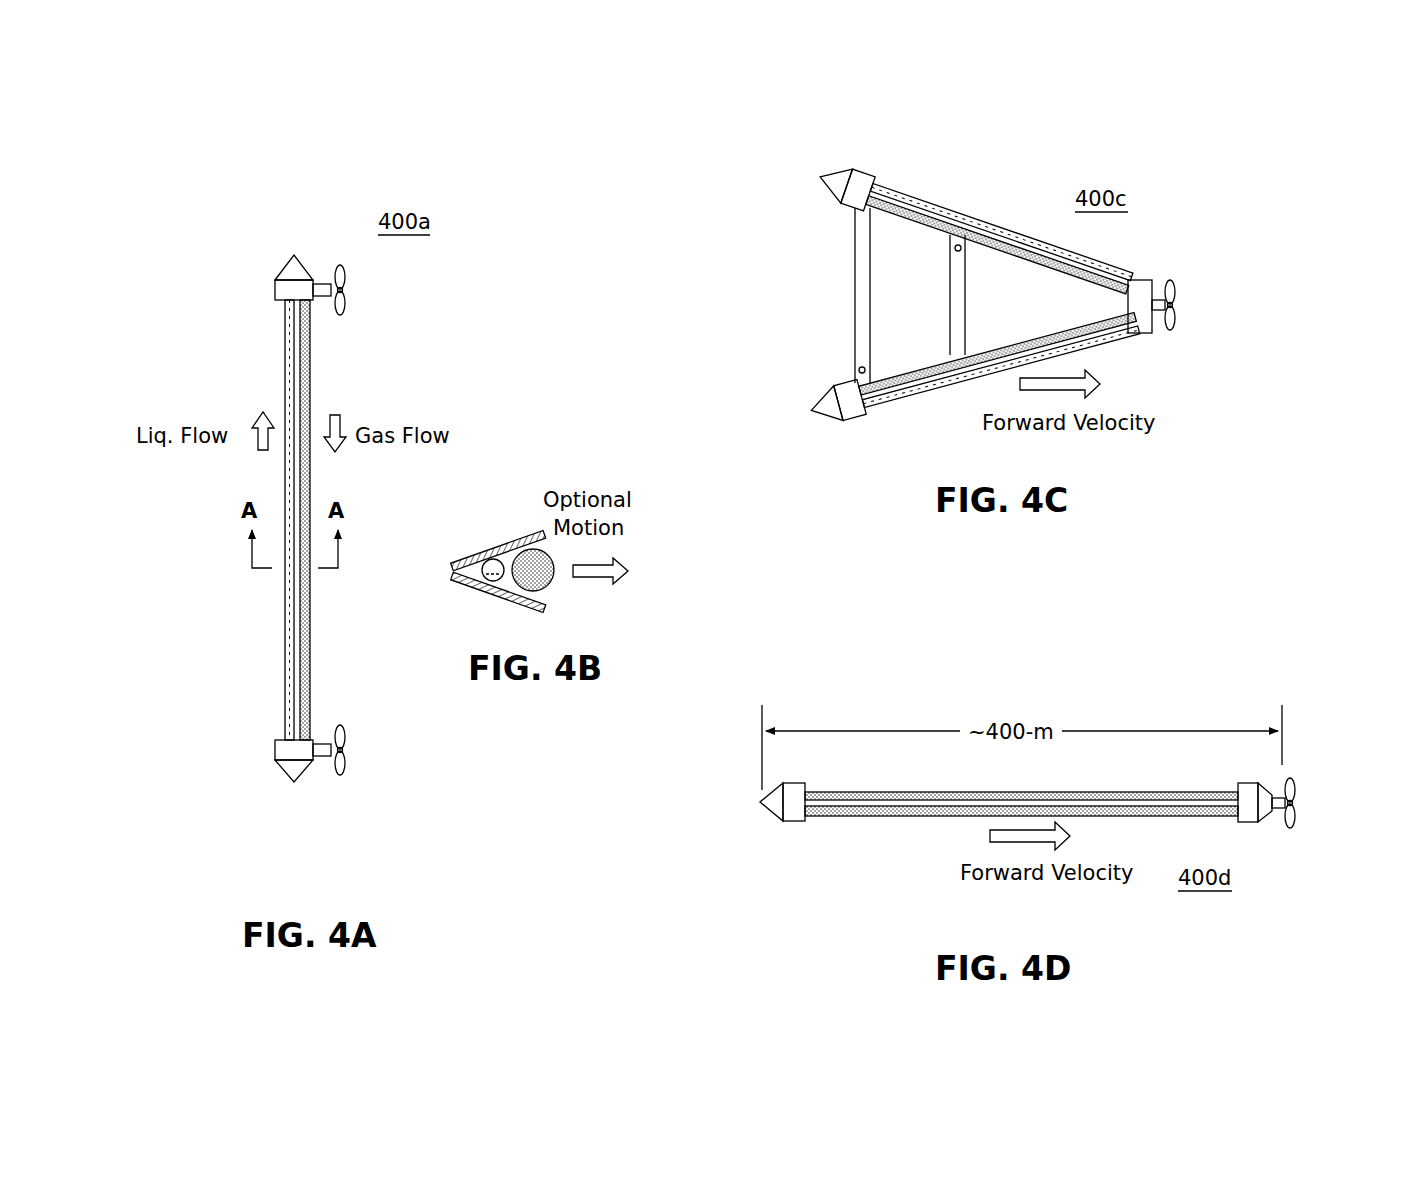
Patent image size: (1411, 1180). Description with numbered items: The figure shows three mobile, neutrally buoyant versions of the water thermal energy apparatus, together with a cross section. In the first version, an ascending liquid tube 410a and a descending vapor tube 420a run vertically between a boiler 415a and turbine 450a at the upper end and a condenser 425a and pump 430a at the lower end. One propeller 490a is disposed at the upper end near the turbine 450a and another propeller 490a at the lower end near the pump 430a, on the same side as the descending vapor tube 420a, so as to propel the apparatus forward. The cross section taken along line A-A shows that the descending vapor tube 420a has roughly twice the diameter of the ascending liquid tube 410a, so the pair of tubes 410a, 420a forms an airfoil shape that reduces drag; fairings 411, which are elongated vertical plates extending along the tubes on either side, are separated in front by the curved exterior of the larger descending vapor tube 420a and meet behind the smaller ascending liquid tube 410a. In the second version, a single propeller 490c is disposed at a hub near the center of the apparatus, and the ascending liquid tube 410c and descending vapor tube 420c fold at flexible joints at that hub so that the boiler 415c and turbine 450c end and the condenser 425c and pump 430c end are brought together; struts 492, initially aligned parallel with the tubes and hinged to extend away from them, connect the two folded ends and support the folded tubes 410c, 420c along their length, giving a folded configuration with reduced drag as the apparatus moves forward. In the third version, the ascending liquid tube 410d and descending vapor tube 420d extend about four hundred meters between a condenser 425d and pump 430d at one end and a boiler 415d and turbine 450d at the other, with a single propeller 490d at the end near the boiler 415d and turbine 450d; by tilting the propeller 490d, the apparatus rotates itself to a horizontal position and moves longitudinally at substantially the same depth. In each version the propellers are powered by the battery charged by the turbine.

In FIG. 4A, the ascending liquid tube 410a is at (284, 631).
In FIG. 4B, the ascending liquid tube 410a is at (490, 560).
In FIG. 4C, the ascending liquid tube 410c is at (903, 378).
In FIG. 4D, the ascending liquid tube 410d is at (885, 805).
In FIG. 4B, the fairing 411 is at (462, 562).
In FIG. 4A, the boiler 415a is at (185, 247).
In FIG. 4C, the boiler 415c is at (742, 142).
In FIG. 4D, the boiler 415d is at (1308, 890).
In FIG. 4A, the descending vapor tube 420a is at (308, 617).
In FIG. 4B, the descending vapor tube 420a is at (546, 584).
In FIG. 4C, the descending vapor tube 420c is at (1095, 333).
In FIG. 4D, the descending vapor tube 420d is at (830, 818).
In FIG. 4A, the condenser 425a is at (185, 800).
In FIG. 4C, the condenser 425c is at (789, 478).
In FIG. 4D, the condenser 425d is at (715, 883).
In FIG. 4A, the pump 430a is at (273, 768).
In FIG. 4C, the pump 430c is at (750, 512).
In FIG. 4D, the pump 430d is at (758, 826).
In FIG. 4A, the turbine 450a is at (270, 278).
In FIG. 4C, the turbine 450c is at (836, 162).
In FIG. 4D, the turbine 450d is at (1268, 830).
In FIG. 4A, the propeller 490a is at (343, 308).
In FIG. 4C, the propeller 490c is at (1172, 290).
In FIG. 4D, the propeller 490d is at (1294, 785).
In FIG. 4C, the strut 492 is at (960, 312).